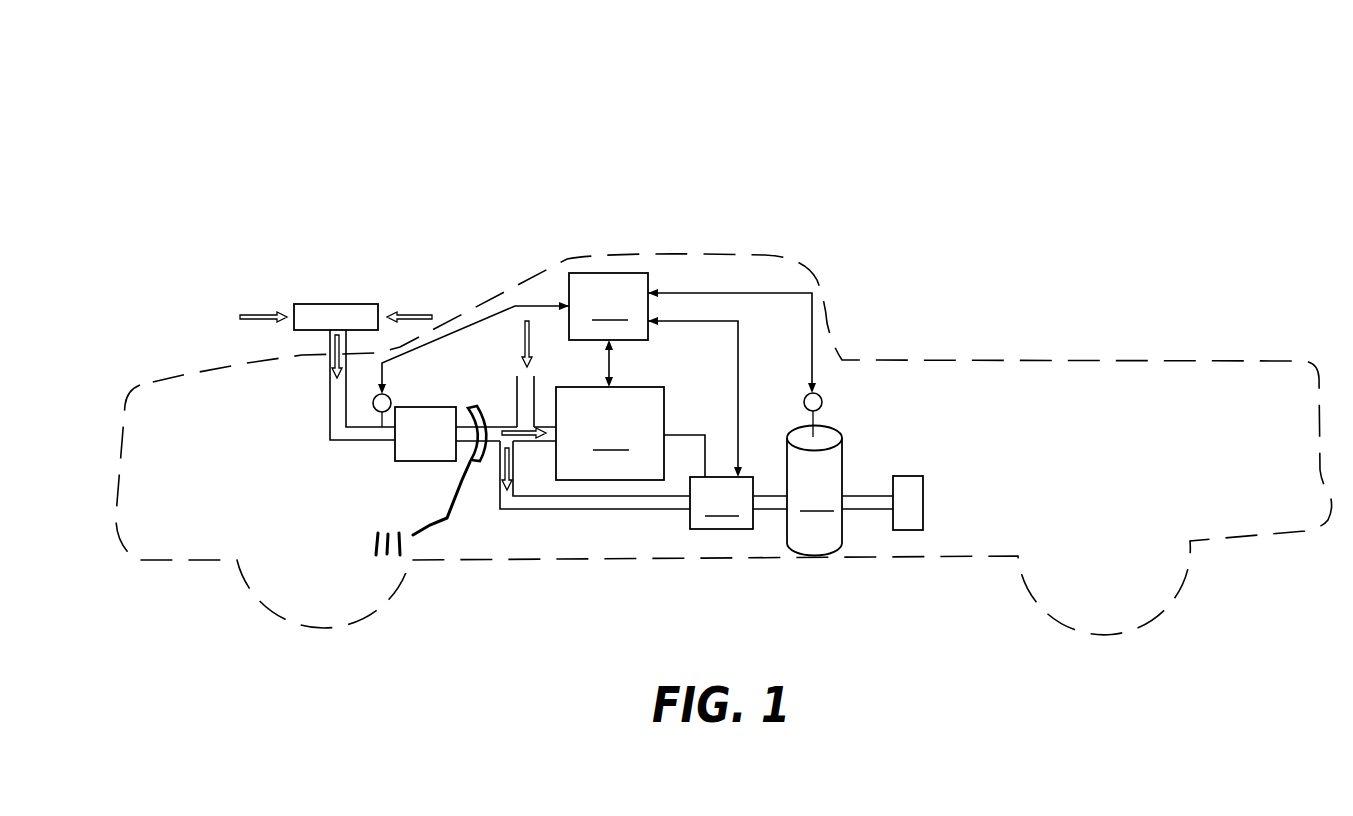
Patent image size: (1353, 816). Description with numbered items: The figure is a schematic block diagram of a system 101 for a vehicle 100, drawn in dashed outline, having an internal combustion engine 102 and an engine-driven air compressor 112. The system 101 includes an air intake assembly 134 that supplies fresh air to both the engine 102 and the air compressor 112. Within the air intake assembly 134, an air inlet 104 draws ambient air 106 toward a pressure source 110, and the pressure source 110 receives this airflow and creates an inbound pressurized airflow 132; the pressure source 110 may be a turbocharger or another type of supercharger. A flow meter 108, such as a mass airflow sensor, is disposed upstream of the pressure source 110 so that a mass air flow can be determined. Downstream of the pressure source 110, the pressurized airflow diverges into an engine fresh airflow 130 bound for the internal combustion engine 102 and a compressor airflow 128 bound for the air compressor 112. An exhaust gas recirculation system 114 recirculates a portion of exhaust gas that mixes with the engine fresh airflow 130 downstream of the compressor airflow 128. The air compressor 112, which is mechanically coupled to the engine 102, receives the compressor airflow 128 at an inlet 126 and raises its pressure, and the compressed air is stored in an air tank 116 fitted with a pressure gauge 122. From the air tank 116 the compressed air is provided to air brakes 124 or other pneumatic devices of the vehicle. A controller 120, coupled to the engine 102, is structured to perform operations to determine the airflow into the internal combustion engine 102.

The vehicle 100 is at (713, 252).
The system 101 is at (243, 124).
The internal combustion engine 102 is at (630, 433).
The air inlet 104 is at (332, 303).
The ambient air 106 is at (255, 313).
The flow meter 108 is at (390, 398).
The pressure source 110 is at (425, 463).
The air compressor 112 is at (721, 503).
The exhaust gas recirculation system 114 is at (520, 327).
The air tank 116 is at (814, 491).
The controller 120 is at (692, 375).
The pressure gauge 122 is at (826, 403).
The air brakes 124 is at (924, 500).
The inlet 126 is at (687, 503).
The compressor airflow 128 is at (502, 465).
The engine fresh airflow 130 is at (507, 427).
The pressurized airflow 132 is at (327, 368).
The air intake assembly 134 is at (458, 292).